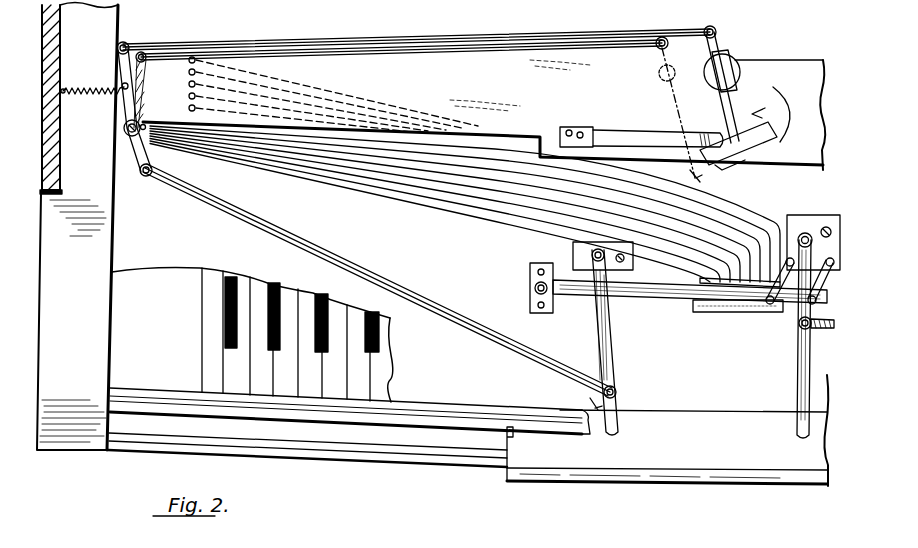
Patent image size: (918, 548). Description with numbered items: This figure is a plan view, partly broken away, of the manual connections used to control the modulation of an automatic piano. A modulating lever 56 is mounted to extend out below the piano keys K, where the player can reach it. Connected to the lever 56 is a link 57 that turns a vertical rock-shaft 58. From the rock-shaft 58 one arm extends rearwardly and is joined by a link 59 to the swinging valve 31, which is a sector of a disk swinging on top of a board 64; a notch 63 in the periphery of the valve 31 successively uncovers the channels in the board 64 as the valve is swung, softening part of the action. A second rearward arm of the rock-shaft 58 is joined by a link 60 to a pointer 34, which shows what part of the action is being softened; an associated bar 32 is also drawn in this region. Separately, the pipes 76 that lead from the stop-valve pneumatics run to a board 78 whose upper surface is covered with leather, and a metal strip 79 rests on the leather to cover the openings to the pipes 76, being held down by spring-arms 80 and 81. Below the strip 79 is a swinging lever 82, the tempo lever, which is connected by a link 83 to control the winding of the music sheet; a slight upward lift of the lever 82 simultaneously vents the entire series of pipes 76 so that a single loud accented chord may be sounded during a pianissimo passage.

The vertical rock-shaft 58 is at (146, 132).
The link 59 is at (300, 42).
The link 60 is at (490, 46).
The pipes 76 is at (474, 180).
The swinging valve 31 is at (752, 101).
The pointer 34 is at (659, 104).
The bar 32 is at (638, 138).
The notch 63 is at (760, 156).
The board 64 is at (816, 162).
The piano keys K is at (335, 307).
The link 57 is at (425, 300).
The modulating lever 56 is at (618, 371).
The metal strip 79 is at (666, 295).
The board 78 is at (700, 308).
The swinging lever 82 is at (800, 400).
The spring-arm 80 is at (738, 308).
The spring-arm 81 is at (800, 305).
The link 83 is at (800, 340).